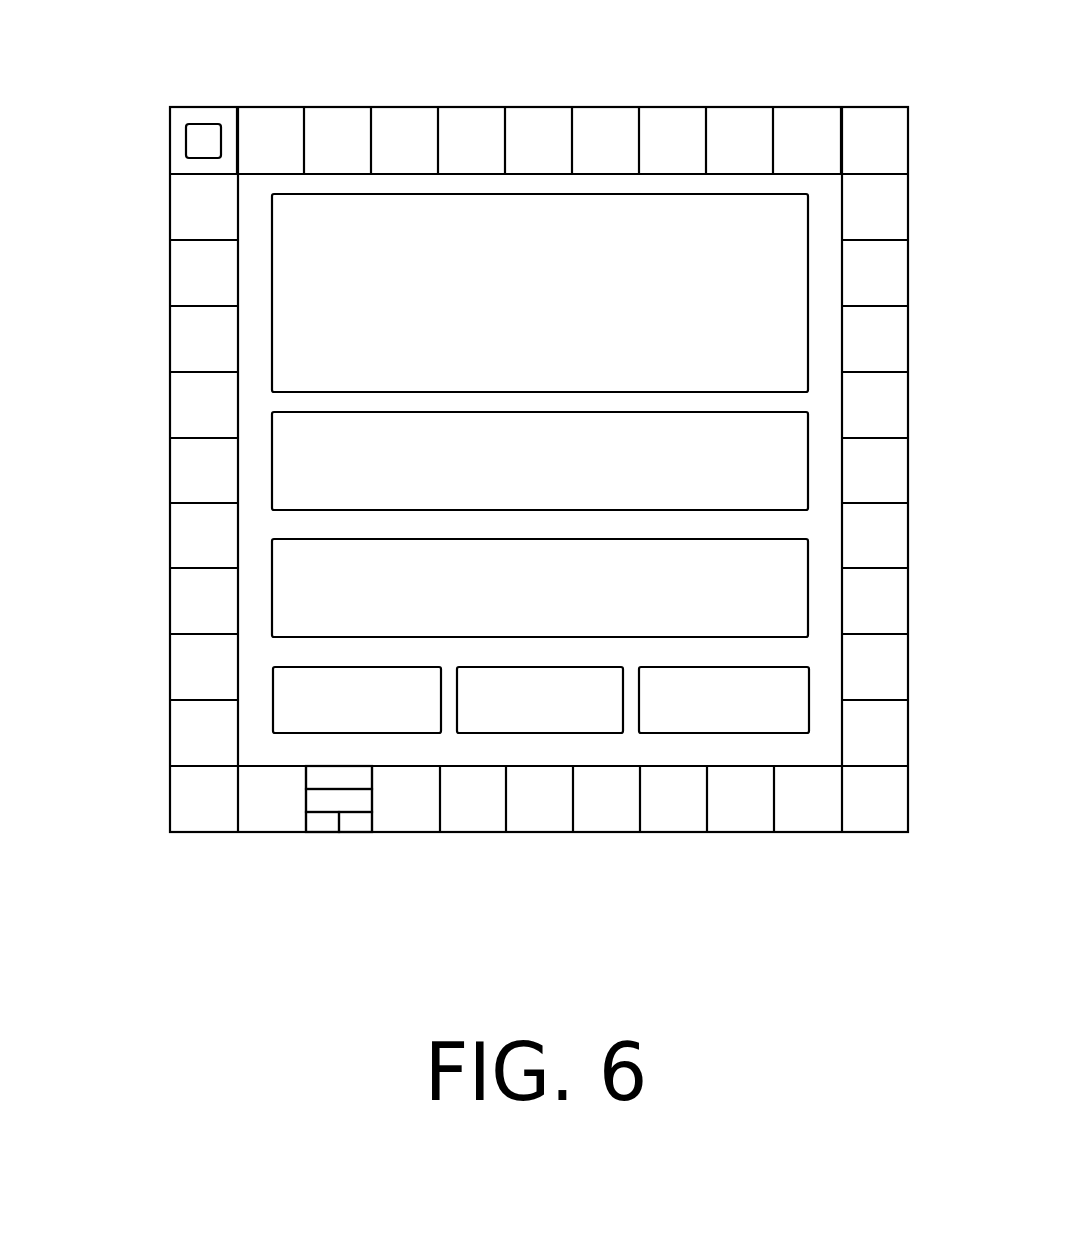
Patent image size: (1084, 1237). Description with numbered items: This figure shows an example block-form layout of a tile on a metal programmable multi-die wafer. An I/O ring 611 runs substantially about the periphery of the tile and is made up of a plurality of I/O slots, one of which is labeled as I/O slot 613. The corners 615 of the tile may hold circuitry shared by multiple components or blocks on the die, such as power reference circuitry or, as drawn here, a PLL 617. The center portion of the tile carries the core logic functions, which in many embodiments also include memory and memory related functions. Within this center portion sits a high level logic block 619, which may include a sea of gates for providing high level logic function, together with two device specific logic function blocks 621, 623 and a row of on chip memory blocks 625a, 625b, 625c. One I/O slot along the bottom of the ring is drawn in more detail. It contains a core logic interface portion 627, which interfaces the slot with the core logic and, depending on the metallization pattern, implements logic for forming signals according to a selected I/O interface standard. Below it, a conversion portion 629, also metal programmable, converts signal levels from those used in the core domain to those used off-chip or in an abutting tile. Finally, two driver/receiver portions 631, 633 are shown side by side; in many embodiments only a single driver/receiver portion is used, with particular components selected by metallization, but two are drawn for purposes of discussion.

The I/O ring 611 is at (665, 108).
The I/O slot 613 is at (498, 162).
The corners 615 is at (170, 804).
The PLL 617 is at (202, 124).
The high level logic block 619 is at (508, 293).
The device specific logic function block 621 is at (508, 473).
The device specific logic function block 623 is at (508, 604).
The on chip memory block 625a is at (400, 721).
The on chip memory block 625b is at (578, 721).
The on chip memory block 625c is at (767, 721).
The core logic interface portion 627 is at (306, 781).
The conversion portion 629 is at (373, 803).
The driver/receiver portion 631 is at (326, 833).
The driver/receiver portion 633 is at (362, 833).